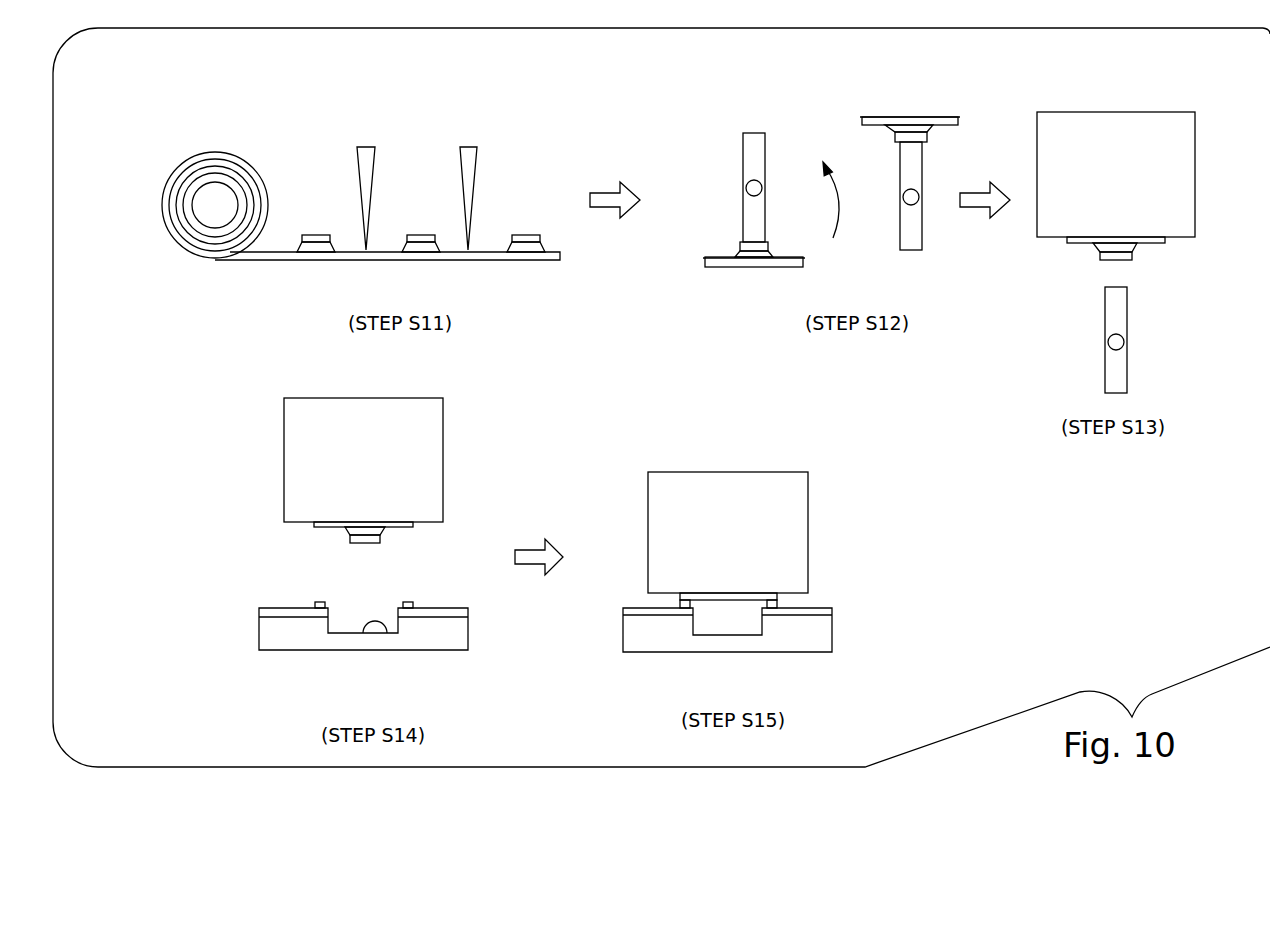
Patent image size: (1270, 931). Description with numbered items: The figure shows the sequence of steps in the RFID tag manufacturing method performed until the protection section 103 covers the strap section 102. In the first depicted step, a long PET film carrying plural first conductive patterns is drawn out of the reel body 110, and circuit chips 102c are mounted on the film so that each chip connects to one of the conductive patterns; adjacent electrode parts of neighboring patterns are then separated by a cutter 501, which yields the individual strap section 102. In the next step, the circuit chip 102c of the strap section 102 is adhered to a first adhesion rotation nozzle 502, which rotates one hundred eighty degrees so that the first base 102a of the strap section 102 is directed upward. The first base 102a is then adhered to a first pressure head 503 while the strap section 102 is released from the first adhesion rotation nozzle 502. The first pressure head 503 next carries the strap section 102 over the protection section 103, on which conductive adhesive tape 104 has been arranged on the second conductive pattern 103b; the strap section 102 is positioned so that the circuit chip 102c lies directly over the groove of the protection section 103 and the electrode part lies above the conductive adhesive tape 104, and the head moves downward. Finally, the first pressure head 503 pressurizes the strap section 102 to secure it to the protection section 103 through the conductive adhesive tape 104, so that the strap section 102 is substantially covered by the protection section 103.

The reel body 110 is at (185, 246).
The cutter 501 is at (366, 147).
The strap section 102 is at (306, 172).
The first base 102a is at (705, 258).
The circuit chip 102c is at (309, 234).
The first adhesion rotation nozzle 502 is at (743, 145).
The first pressure head 503 is at (1147, 112).
The protection section 103 is at (545, 630).
The second conductive pattern 103b is at (276, 607).
The conductive adhesive tape 104 is at (320, 601).